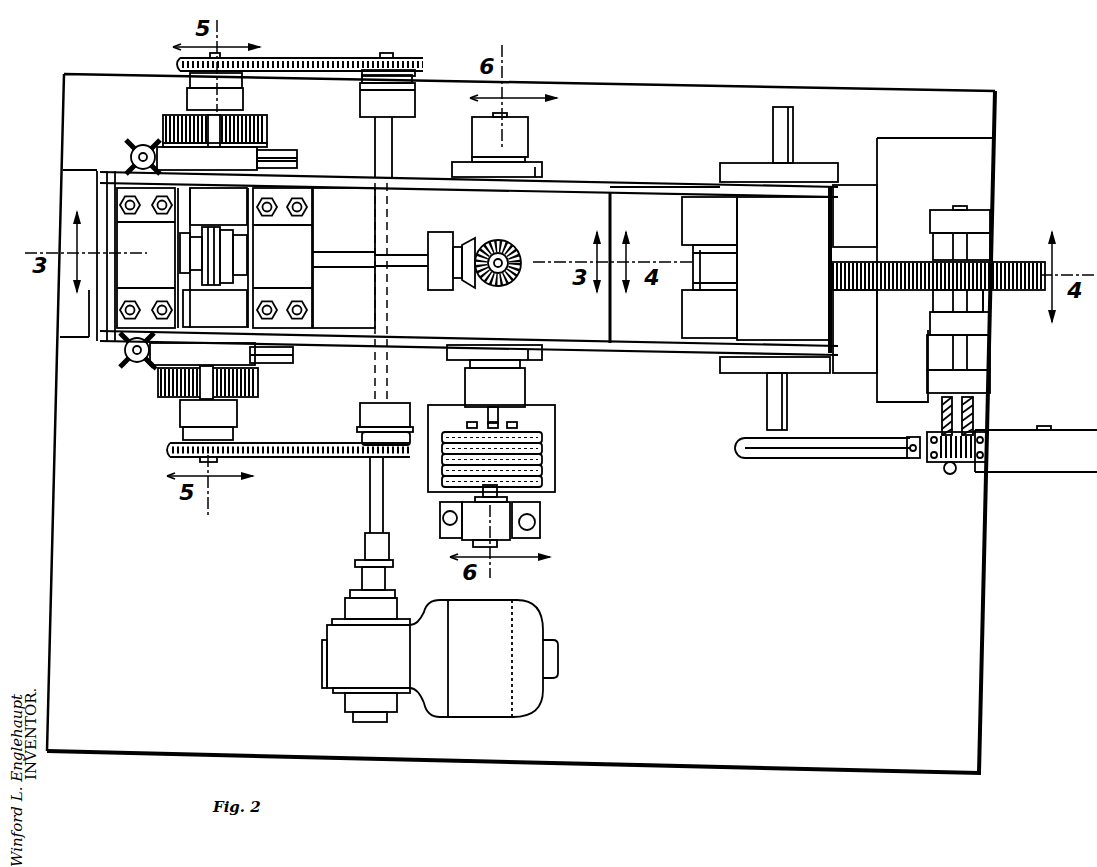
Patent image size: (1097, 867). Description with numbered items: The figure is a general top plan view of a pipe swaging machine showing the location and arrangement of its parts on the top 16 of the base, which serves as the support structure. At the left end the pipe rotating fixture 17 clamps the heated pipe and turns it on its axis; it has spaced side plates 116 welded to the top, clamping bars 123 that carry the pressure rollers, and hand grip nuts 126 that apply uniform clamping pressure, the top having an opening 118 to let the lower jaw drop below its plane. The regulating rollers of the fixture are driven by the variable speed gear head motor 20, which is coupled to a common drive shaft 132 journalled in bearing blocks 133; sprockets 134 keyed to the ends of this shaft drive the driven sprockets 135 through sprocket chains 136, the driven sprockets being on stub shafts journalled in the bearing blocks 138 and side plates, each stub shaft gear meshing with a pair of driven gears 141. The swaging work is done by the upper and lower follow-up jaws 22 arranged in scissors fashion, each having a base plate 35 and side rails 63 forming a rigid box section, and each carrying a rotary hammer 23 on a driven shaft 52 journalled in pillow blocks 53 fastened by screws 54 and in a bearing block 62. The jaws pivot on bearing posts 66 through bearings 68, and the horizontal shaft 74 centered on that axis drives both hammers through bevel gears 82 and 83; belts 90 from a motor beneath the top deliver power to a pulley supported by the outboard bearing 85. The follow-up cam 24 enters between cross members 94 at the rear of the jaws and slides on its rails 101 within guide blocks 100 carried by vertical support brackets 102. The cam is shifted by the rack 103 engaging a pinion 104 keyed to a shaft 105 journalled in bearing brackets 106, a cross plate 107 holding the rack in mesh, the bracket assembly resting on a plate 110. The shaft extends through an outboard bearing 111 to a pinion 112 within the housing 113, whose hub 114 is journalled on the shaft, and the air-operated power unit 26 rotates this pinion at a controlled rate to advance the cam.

The top 16 is at (64, 494).
The pipe rotating fixture 17 is at (300, 150).
The variable speed gear head motor 20 is at (543, 620).
The follow-up jaws 22 is at (600, 187).
The rotary hammer 23 is at (212, 228).
The follow-up cam 24 is at (703, 288).
The power unit 26 is at (1065, 472).
The base plate 35 is at (597, 211).
The driven shaft 52 is at (343, 263).
The pillow blocks 53 is at (300, 243).
The screws 54 is at (302, 207).
The bearing block 62 is at (437, 232).
The side rails 63 is at (647, 190).
The bearing posts 66 is at (528, 137).
The bearings 68 is at (542, 170).
The horizontal shaft 74 is at (507, 115).
The bevel gears 82 is at (520, 255).
The bevel gears 83 is at (470, 245).
The outboard bearing 85 is at (510, 535).
The belts 90 is at (542, 465).
The cross members 94 is at (815, 235).
The guide blocks 100 is at (877, 205).
The rails 101 is at (712, 245).
The vertical support brackets 102 is at (760, 170).
The rack 103 is at (903, 262).
The pinion 104 is at (940, 290).
The shaft 105 is at (970, 248).
The bearing brackets 106 is at (992, 220).
The cross plate 107 is at (985, 295).
The plate 110 is at (877, 397).
The outboard bearing 111 is at (990, 383).
The pinion 112 is at (950, 474).
The housing 113 is at (915, 460).
The hub 114 is at (942, 415).
The side plates 116 is at (293, 355).
The opening 118 is at (97, 183).
The clamping bars 123 is at (152, 368).
The hand grip nuts 126 is at (128, 150).
The common drive shaft 132 is at (392, 148).
The bearing blocks 133 is at (360, 98).
The sprockets 134 is at (427, 60).
The driven sprockets 135 is at (180, 62).
The sprocket chains 136 is at (300, 58).
The bearing blocks 138 is at (190, 96).
The driven gears 141 is at (165, 125).